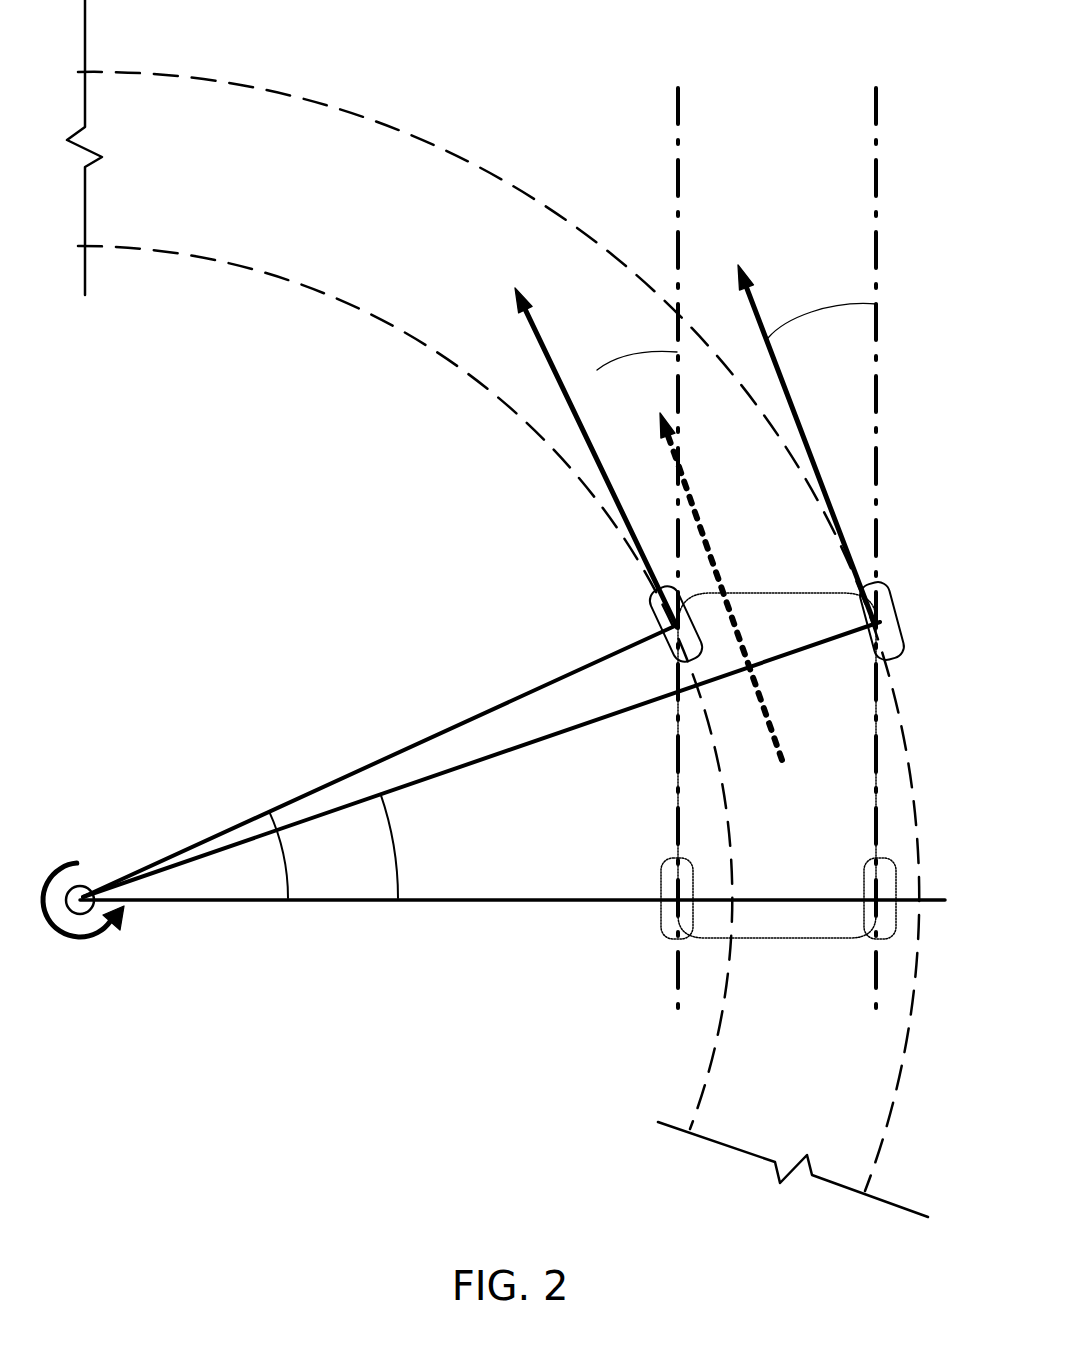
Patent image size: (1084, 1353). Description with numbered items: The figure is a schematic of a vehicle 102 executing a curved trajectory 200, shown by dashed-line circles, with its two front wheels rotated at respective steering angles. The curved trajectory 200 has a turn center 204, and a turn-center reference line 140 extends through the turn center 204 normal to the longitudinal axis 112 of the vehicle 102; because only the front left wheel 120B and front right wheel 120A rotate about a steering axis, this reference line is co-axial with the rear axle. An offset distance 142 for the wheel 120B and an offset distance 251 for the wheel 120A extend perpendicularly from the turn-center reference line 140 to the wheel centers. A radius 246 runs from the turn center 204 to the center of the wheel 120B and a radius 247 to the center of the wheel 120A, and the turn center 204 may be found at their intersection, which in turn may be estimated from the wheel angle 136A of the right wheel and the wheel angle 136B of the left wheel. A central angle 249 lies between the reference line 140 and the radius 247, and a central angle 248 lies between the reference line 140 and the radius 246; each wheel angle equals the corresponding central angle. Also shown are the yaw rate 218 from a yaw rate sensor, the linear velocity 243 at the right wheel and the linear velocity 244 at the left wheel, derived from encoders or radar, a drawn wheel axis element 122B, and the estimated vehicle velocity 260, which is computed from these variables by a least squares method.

The vehicle 102 is at (827, 967).
The longitudinal axis 112 is at (876, 112).
The front right wheel 120A is at (900, 632).
The front left wheel 120B is at (652, 610).
The wheel drive axis 122B is at (530, 335).
The wheel angle 136A is at (900, 423).
The wheel angle 136B is at (460, 513).
The turn-center reference line 140 is at (522, 902).
The offset distance 142 is at (677, 823).
The curved trajectory 200 is at (270, 88).
The turn center 204 is at (87, 882).
The yaw rate 218 is at (107, 935).
The linear velocity 243 is at (760, 312).
The linear velocity 244 is at (530, 323).
The radius 246 is at (427, 737).
The radius 247 is at (467, 767).
The central angle 248 is at (268, 977).
The central angle 249 is at (382, 990).
The offset distance 251 is at (876, 795).
The estimated vehicle velocity 260 is at (693, 512).